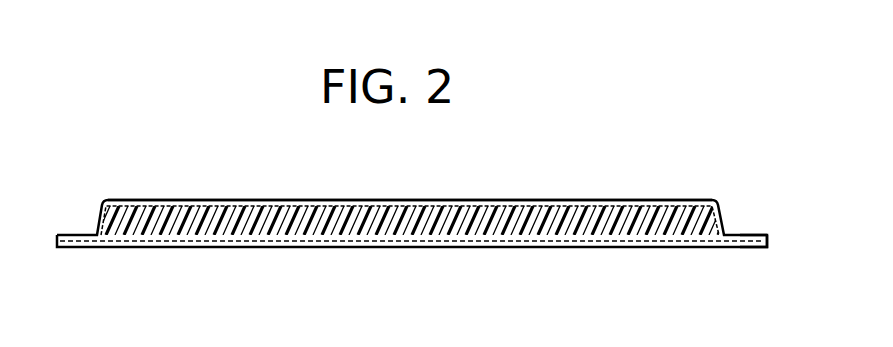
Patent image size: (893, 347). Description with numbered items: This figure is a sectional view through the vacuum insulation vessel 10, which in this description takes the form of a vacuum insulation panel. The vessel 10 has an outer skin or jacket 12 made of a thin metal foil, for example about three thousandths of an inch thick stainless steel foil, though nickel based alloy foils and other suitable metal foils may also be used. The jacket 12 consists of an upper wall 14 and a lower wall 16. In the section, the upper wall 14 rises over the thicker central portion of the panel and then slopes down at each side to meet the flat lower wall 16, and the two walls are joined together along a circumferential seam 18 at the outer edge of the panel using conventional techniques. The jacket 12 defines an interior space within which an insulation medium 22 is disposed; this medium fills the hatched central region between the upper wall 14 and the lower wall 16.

The vacuum insulation vessel 10 is at (686, 148).
The outer skin or jacket 12 is at (100, 201).
The upper wall 14 is at (510, 200).
The lower wall 16 is at (623, 248).
The circumferential seam 18 is at (784, 230).
The insulation medium 22 is at (605, 212).